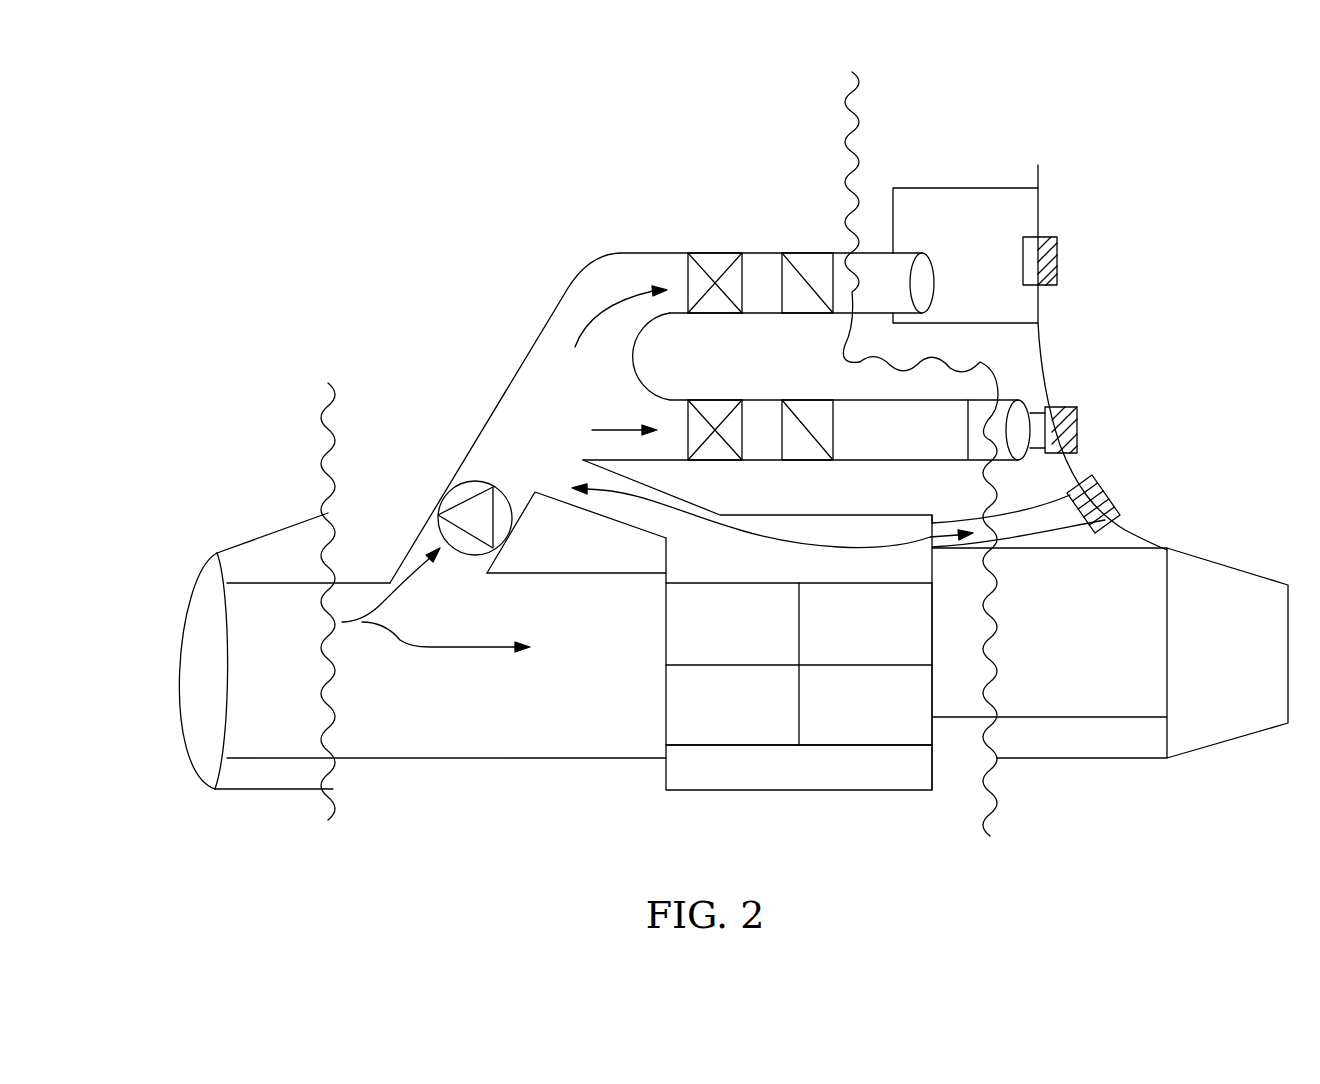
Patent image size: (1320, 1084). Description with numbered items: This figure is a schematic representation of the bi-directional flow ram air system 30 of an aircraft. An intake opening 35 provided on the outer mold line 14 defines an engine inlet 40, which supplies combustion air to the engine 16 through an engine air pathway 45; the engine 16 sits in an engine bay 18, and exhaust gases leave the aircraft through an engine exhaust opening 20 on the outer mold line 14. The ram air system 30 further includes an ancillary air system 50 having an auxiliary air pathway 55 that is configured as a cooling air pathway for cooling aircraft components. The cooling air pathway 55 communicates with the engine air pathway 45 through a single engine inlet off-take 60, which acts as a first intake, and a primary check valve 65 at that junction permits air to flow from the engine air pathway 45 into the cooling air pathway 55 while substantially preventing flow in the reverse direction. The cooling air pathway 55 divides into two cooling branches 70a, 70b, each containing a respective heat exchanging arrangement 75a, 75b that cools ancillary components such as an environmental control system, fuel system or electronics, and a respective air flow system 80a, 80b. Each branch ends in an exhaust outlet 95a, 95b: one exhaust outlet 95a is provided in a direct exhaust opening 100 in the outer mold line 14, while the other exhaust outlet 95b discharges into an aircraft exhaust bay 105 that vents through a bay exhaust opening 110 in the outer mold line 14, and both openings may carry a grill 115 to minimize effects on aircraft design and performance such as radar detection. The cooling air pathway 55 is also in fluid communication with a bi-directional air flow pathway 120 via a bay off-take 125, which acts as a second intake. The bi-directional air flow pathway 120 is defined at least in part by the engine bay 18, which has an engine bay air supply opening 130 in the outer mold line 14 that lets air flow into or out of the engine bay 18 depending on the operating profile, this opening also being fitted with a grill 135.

The outer mold line 14 is at (250, 518).
The engine 16 is at (675, 705).
The engine bay 18 is at (795, 772).
The engine exhaust opening 20 is at (1220, 573).
The bi-directional flow ram air system 30 is at (280, 206).
The intake opening 35 is at (188, 677).
The engine inlet 40 is at (440, 740).
The engine air pathway 45 is at (516, 790).
The ancillary air system 50 is at (475, 361).
The auxiliary air pathway 55 is at (725, 214).
The engine inlet off-take 60 is at (429, 592).
The primary check valve 65 is at (457, 493).
The cooling branch 70a is at (672, 374).
The cooling branch 70b is at (540, 243).
The heat exchanging arrangement 75a is at (725, 457).
The heat exchanging arrangement 75b is at (695, 280).
The air flow system 80a is at (815, 398).
The air flow system 80b is at (808, 252).
The exhaust outlet 95a is at (1018, 445).
The exhaust outlet 95b is at (927, 283).
The direct exhaust opening 100 is at (1077, 447).
The aircraft exhaust bay 105 is at (1000, 203).
The bay exhaust opening 110 is at (1030, 252).
The grill 115 is at (1055, 260).
The bi-directional air flow pathway 120 is at (890, 538).
The bay off-take 125 is at (658, 517).
The engine bay air supply opening 130 is at (1107, 520).
The grill 135 is at (1112, 490).